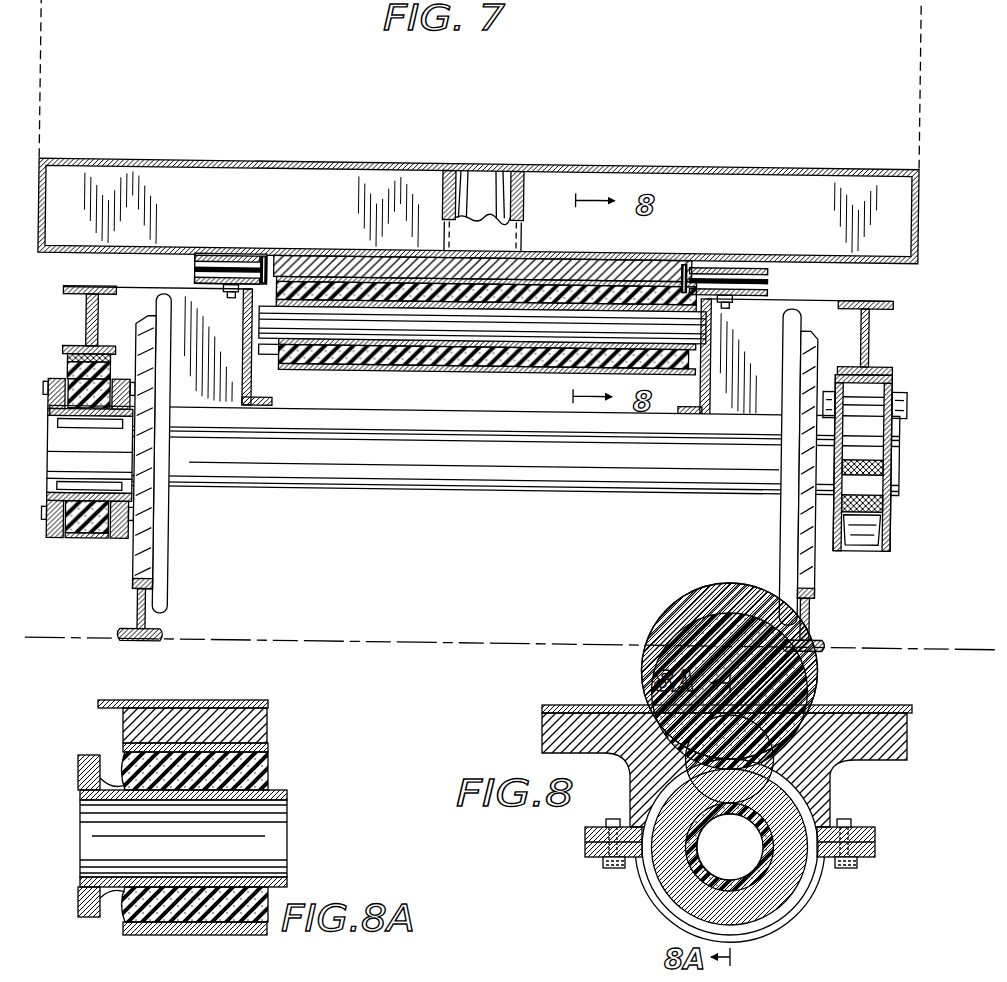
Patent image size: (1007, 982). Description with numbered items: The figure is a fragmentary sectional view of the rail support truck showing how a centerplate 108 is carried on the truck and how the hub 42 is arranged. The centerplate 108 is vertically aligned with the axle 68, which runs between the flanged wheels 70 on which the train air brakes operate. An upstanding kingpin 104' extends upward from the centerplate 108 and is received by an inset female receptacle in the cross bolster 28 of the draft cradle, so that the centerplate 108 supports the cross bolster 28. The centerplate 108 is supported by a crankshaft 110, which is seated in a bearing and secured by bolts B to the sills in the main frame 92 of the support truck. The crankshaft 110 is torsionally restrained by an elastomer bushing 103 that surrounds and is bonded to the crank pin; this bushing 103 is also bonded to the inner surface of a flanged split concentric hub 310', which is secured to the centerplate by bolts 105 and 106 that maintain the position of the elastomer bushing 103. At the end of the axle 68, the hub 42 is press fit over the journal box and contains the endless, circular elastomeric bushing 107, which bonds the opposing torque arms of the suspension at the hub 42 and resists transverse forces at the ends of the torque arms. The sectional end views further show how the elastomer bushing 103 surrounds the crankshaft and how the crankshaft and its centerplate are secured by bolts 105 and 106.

In FIG. 7, the cross bolster 28 is at (800, 166).
In FIG. 8A, the cross bolster 28 is at (230, 700).
In FIG. 8, the cross bolster 28 is at (775, 706).
In FIG. 7, the kingpin 104' is at (483, 191).
In FIG. 7, the centerplate 108 is at (687, 170).
In FIG. 8A, the centerplate 108 is at (263, 728).
In FIG. 8, the centerplate 108 is at (553, 732).
In FIG. 7, the elastomer bushing 103 is at (663, 272).
In FIG. 8A, the elastomer bushing 103 is at (273, 777).
In FIG. 8, the elastomer bushing 103 is at (783, 925).
In FIG. 7, the crankshaft 110 is at (763, 290).
In FIG. 7, the main frame 92 is at (243, 360).
In FIG. 7, the bolts B is at (222, 302).
In FIG. 7, the hub 42 is at (55, 428).
In FIG. 7, the flanged split concentric hub 310' is at (482, 360).
In FIG. 8, the flanged split concentric hub 310' is at (699, 848).
In FIG. 7, the axle 68 is at (322, 480).
In FIG. 7, the elastomeric bushing 107 is at (84, 540).
In FIG. 7, the flanged wheels 70 is at (165, 612).
In FIG. 8, the bolt 106 is at (615, 870).
In FIG. 8, the bolt 105 is at (845, 870).